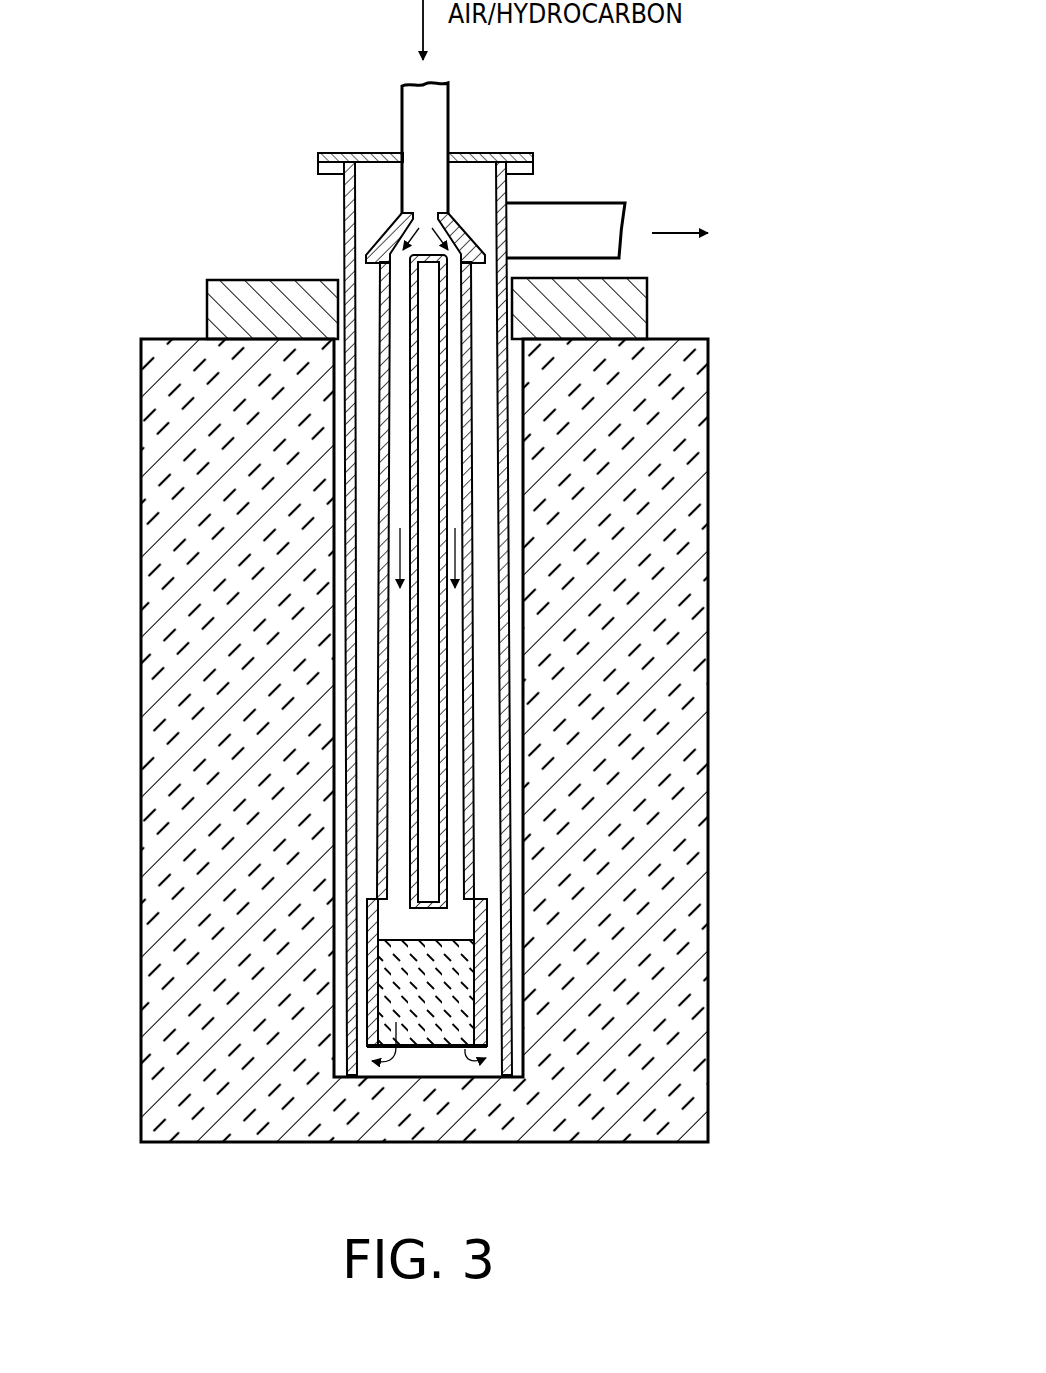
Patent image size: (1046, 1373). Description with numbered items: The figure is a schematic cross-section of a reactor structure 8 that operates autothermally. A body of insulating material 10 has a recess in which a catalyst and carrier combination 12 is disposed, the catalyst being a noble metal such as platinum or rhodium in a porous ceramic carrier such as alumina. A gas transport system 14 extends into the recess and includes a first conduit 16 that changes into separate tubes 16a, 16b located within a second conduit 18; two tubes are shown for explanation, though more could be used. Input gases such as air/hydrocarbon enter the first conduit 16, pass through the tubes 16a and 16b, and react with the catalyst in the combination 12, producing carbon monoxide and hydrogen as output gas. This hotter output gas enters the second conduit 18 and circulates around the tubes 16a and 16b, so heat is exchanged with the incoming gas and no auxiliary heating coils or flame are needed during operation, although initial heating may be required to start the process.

The reactor structure 8 is at (584, 181).
The body of insulating material 10 is at (153, 462).
The catalyst and carrier combination 12 is at (452, 1025).
The gas transport system 14 is at (367, 279).
The first conduit 16 is at (450, 137).
The tube 16a is at (398, 308).
The tube 16b is at (458, 275).
The second conduit 18 is at (602, 212).